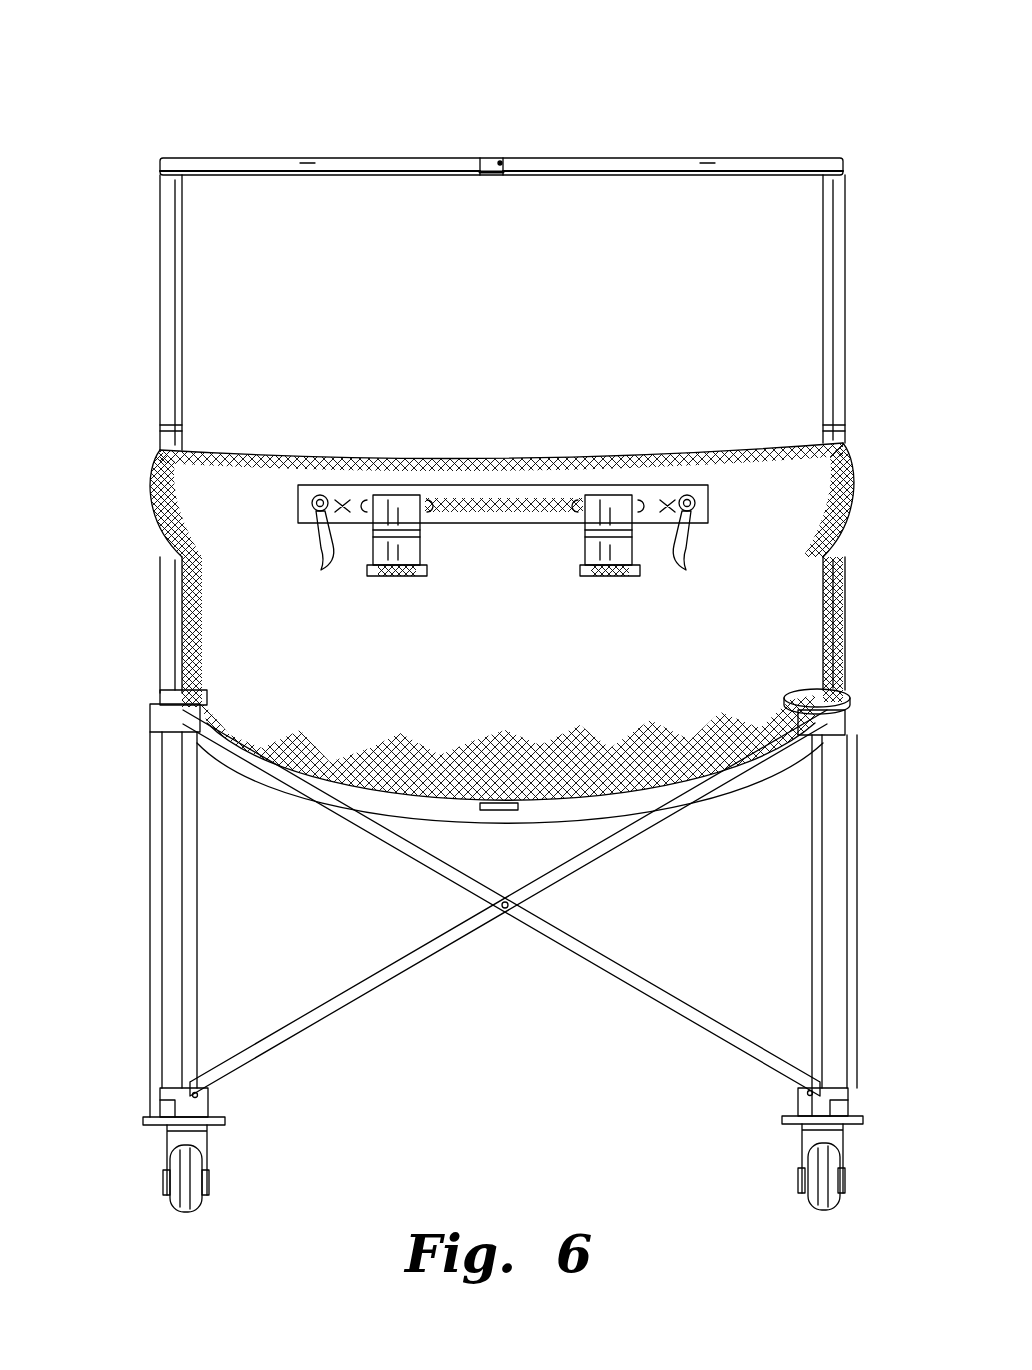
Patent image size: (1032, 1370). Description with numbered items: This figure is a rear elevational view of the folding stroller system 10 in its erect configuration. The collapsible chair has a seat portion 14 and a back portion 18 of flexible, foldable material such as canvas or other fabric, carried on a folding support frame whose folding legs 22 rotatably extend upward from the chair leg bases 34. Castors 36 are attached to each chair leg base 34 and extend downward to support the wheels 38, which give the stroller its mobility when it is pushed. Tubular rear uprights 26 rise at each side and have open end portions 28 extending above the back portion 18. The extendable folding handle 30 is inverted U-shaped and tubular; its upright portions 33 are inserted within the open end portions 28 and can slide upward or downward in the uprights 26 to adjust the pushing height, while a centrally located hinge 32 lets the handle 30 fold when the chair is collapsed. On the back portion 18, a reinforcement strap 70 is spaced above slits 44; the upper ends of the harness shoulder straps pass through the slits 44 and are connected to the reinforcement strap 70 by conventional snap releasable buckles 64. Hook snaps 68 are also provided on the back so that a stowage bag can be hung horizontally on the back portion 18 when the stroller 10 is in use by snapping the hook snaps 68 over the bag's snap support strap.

The folding stroller system 10 is at (90, 98).
The seat portion 14 is at (430, 790).
The back portion 18 is at (512, 604).
The folding legs 22 is at (580, 968).
The tubular rear uprights 26 is at (160, 640).
The open end portions 28 is at (183, 430).
The extendable folding handle 30 is at (330, 160).
The hinge 32 is at (502, 158).
The upright portions 33 is at (160, 284).
The chair leg bases 34 is at (215, 1100).
The castors 36 is at (213, 1140).
The wheels 38 is at (205, 1206).
The slits 44 is at (378, 577).
The snap releasable buckles 64 is at (420, 545).
The hook snaps 68 is at (318, 556).
The reinforcement strap 70 is at (498, 485).